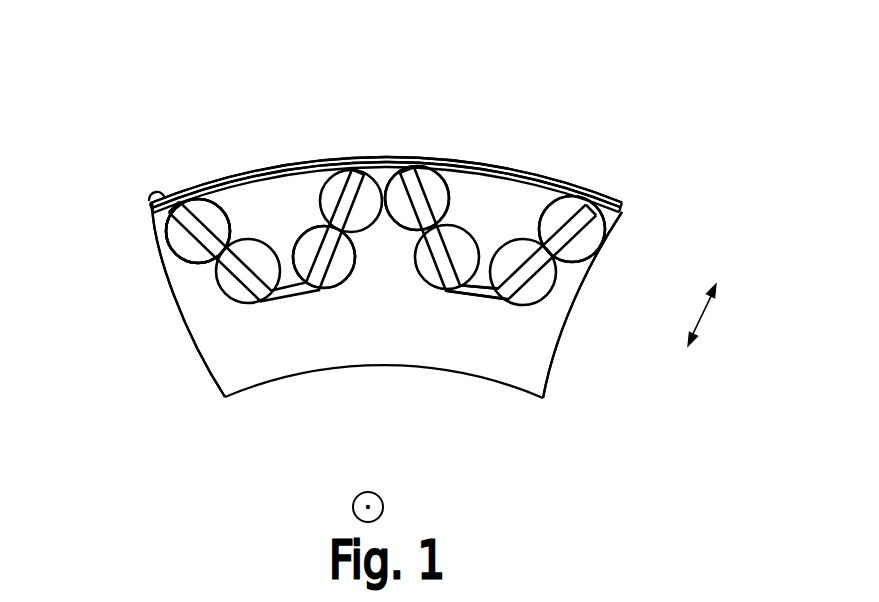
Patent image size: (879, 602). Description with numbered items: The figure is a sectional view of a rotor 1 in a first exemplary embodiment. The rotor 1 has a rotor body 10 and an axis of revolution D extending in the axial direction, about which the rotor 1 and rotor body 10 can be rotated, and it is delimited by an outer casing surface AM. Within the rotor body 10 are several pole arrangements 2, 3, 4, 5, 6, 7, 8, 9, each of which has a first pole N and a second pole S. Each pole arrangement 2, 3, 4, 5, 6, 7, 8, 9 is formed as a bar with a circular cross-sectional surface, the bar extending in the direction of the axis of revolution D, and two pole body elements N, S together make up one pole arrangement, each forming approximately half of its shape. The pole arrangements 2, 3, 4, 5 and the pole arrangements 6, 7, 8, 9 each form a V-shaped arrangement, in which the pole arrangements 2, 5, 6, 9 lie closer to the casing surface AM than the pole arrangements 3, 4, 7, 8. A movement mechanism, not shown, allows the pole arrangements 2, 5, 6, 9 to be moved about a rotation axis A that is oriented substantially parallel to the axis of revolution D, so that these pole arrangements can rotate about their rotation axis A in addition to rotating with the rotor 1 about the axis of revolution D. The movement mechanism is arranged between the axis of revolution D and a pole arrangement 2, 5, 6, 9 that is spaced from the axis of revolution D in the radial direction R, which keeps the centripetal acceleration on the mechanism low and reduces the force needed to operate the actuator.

The rotor 1 is at (595, 75).
The pole arrangement 2 is at (157, 253).
The pole arrangement 3 is at (200, 302).
The pole arrangement 4 is at (282, 214).
The pole arrangement 5 is at (349, 142).
The pole arrangement 6 is at (422, 157).
The pole arrangement 7 is at (477, 219).
The pole arrangement 8 is at (518, 323).
The pole arrangement 9 is at (598, 273).
The rotor body 10 is at (250, 354).
The outer casing surface AM is at (153, 200).
The rotation axis A is at (153, 200).
The first pole N is at (199, 232).
The second pole S is at (173, 236).
The axis of revolution D is at (353, 498).
The radial direction R is at (702, 318).